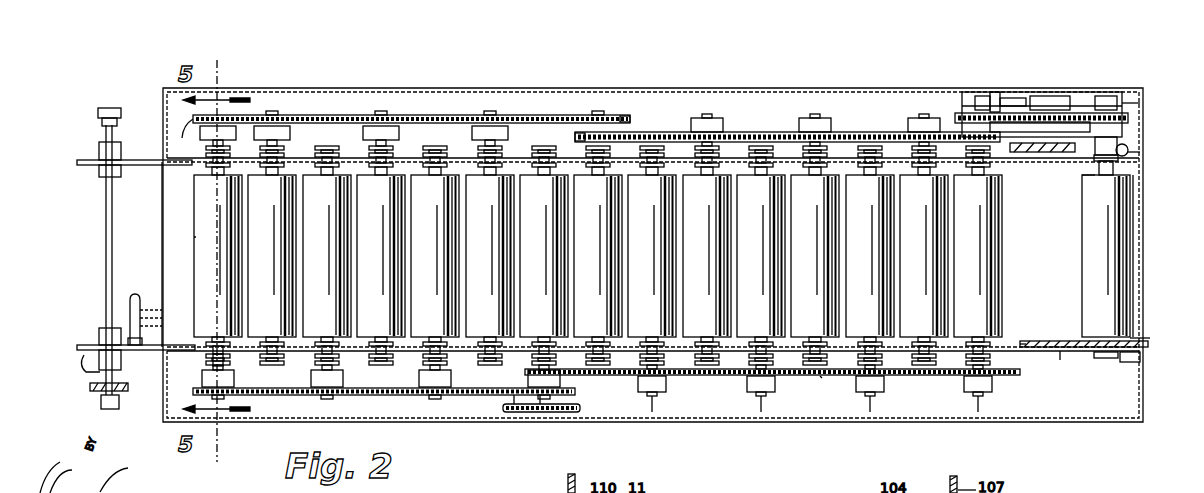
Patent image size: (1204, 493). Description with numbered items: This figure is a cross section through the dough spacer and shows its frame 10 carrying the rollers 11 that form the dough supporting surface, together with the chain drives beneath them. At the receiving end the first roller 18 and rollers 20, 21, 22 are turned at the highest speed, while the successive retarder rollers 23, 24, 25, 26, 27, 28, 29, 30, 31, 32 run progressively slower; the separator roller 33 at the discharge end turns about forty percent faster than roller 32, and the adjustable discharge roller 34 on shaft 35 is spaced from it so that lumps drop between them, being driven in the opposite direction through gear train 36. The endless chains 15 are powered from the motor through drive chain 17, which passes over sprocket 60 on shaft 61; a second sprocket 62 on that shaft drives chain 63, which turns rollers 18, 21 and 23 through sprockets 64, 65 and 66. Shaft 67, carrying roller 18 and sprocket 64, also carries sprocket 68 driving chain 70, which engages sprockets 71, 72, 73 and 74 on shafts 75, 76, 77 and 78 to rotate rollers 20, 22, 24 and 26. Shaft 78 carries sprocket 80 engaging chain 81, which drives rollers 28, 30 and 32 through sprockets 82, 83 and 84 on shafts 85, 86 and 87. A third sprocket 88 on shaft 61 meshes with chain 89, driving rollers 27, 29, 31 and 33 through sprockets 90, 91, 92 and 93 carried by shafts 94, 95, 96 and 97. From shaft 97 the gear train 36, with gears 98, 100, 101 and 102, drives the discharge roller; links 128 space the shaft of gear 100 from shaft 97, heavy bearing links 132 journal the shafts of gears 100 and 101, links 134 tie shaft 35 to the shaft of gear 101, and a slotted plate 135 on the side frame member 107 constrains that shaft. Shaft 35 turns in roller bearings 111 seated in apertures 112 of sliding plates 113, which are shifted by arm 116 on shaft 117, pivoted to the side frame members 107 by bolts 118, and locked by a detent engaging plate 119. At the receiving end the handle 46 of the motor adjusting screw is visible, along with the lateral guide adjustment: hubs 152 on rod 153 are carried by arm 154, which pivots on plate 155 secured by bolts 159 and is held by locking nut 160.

The frame 10 is at (160, 200).
The rollers 11 is at (192, 243).
The endless chains 15 is at (820, 378).
The drive chain 17 is at (510, 412).
The first roller 18 is at (200, 270).
The roller 20 is at (272, 256).
The roller 21 is at (327, 256).
The roller 22 is at (381, 256).
The retarder roller 23 is at (435, 256).
The retarder roller 24 is at (490, 256).
The retarder roller 25 is at (544, 256).
The retarder roller 26 is at (598, 256).
The retarder roller 27 is at (652, 256).
The retarder roller 28 is at (707, 256).
The retarder roller 29 is at (761, 256).
The retarder roller 30 is at (815, 256).
The retarder roller 31 is at (870, 256).
The retarder roller 32 is at (924, 256).
The separator roller 33 is at (984, 213).
The discharge roller 34 is at (1112, 218).
The shaft 35 is at (1100, 172).
The gear train 36 is at (1098, 112).
The handle 46 is at (134, 294).
The sprocket 60 is at (580, 408).
The shaft 61 is at (544, 412).
The second sprocket 62 is at (562, 388).
The chain 63 is at (470, 395).
The sprocket 64 is at (205, 376).
The sprocket 65 is at (312, 376).
The sprocket 66 is at (452, 376).
The shaft 67 is at (234, 373).
The sprocket 68 is at (181, 136).
The chain 70 is at (528, 115).
The sprocket 71 is at (290, 133).
The sprocket 72 is at (399, 133).
The sprocket 73 is at (508, 133).
The sprocket 74 is at (632, 117).
The shaft 75 is at (272, 111).
The shaft 76 is at (381, 111).
The shaft 77 is at (490, 111).
The shaft 78 is at (598, 111).
The sprocket 80 is at (575, 137).
The chain 81 is at (768, 132).
The sprocket 82 is at (691, 128).
The sprocket 83 is at (831, 122).
The sprocket 84 is at (908, 122).
The shaft 85 is at (712, 114).
The shaft 86 is at (818, 114).
The shaft 87 is at (924, 114).
The third sprocket 88 is at (524, 345).
The chain 89 is at (712, 376).
The sprocket 90 is at (666, 392).
The sprocket 91 is at (775, 392).
The sprocket 92 is at (884, 392).
The sprocket 93 is at (992, 390).
The shaft 94 is at (652, 412).
The shaft 95 is at (761, 412).
The shaft 96 is at (872, 412).
The shaft 97 is at (978, 412).
The gear 98 is at (962, 98).
The gear 100 is at (1016, 98).
The gear 101 is at (1068, 122).
The gear 102 is at (1140, 108).
The side frame members 107 is at (1018, 346).
The roller bearings 111 is at (1140, 356).
The apertures 112 is at (1128, 150).
The plates 113 is at (1060, 360).
The arm 116 is at (1145, 338).
The shaft 117 is at (1134, 200).
The bolts 118 is at (1140, 156).
The plate 119 is at (1062, 341).
The links 128 is at (996, 92).
The bearing links 132 is at (1050, 96).
The links 134 is at (1106, 96).
The plate 135 is at (1032, 152).
The hubs 152 is at (99, 148).
The rod 153 is at (106, 262).
The arm 154 is at (86, 372).
The plate 155 is at (84, 165).
The bolts 159 is at (178, 175).
The locking nut 160 is at (100, 396).